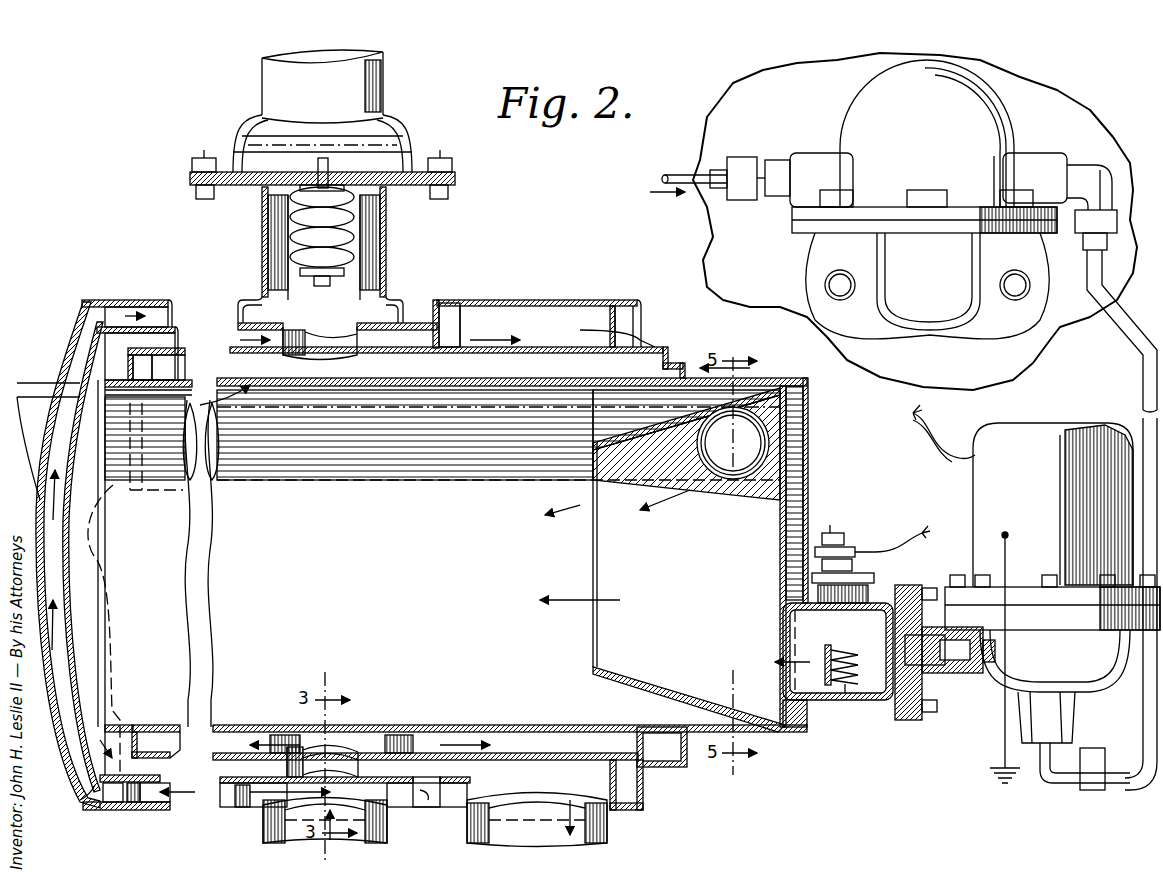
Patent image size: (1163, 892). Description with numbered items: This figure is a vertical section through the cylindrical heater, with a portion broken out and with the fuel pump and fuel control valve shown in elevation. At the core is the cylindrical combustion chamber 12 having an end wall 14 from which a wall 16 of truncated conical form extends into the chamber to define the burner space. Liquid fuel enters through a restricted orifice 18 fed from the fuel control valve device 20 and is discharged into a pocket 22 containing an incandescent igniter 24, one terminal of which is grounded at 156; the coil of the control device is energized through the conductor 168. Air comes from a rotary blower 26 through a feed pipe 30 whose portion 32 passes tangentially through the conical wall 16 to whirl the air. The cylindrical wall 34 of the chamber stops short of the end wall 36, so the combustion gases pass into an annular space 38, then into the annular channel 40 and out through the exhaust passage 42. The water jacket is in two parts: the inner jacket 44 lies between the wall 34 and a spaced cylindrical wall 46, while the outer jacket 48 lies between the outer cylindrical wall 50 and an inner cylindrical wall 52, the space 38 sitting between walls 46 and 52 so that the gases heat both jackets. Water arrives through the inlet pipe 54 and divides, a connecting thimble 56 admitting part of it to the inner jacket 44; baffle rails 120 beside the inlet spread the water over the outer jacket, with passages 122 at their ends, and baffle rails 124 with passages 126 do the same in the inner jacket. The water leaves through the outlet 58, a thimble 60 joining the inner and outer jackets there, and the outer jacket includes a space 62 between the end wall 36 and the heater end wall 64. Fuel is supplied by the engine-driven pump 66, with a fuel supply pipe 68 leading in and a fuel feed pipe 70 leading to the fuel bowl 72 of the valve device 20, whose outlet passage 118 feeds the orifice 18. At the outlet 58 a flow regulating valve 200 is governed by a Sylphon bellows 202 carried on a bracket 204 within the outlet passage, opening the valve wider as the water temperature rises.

The combustion chamber 12 is at (418, 570).
The end wall 14 is at (795, 480).
The wall of truncated conical form 16 is at (620, 668).
The restricted orifice 18 is at (940, 680).
The fuel control valve device 20 is at (973, 500).
The pocket 22 is at (870, 693).
The igniter 24 is at (825, 658).
The rotary blower 26 is at (40, 410).
The feed pipe 30 is at (250, 480).
The portion 32 is at (725, 470).
The cylindrical wall 34 is at (430, 386).
The end wall 36 is at (80, 605).
The annular space 38 is at (405, 327).
The annular channel 40 is at (583, 322).
The exhaust passage 42 is at (590, 830).
The inner jacket 44 is at (600, 347).
The cylindrical wall 46 is at (508, 322).
The outer jacket 48 is at (148, 310).
The outer cylindrical wall 50 is at (120, 300).
The inner cylindrical wall 52 is at (170, 327).
The inlet pipe 54 is at (263, 836).
The connecting thimble 56 is at (335, 740).
The water outlet 58 is at (385, 250).
The thimble 60 is at (335, 355).
The space 62 is at (62, 345).
The end wall 64 is at (72, 365).
The pump 66 is at (965, 143).
The fuel supply pipe 68 is at (680, 175).
The fuel feed pipe 70 is at (1142, 700).
The fuel bowl 72 is at (1095, 676).
The outlet passage 118 is at (950, 660).
The baffle rails 120 is at (235, 800).
The passages 122 is at (100, 808).
The baffle rails 124 is at (432, 748).
The passages 126 is at (145, 725).
The ground 156 is at (1002, 752).
The conductor 168 is at (912, 414).
The flow regulating valve 200 is at (400, 138).
The governing bellows 202 is at (290, 216).
The bracket 204 is at (392, 220).